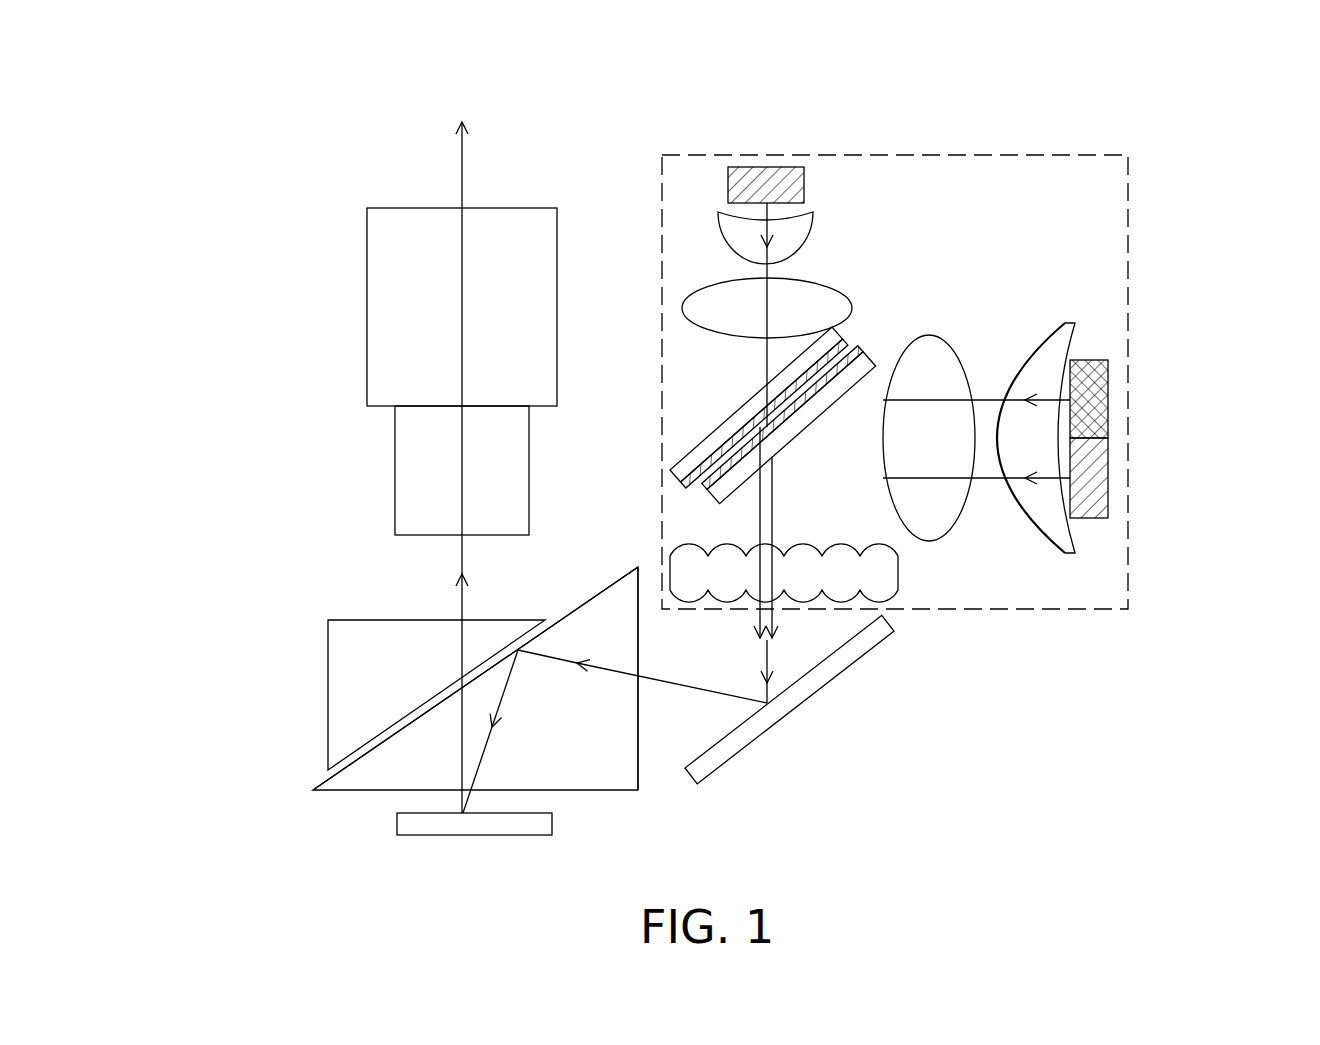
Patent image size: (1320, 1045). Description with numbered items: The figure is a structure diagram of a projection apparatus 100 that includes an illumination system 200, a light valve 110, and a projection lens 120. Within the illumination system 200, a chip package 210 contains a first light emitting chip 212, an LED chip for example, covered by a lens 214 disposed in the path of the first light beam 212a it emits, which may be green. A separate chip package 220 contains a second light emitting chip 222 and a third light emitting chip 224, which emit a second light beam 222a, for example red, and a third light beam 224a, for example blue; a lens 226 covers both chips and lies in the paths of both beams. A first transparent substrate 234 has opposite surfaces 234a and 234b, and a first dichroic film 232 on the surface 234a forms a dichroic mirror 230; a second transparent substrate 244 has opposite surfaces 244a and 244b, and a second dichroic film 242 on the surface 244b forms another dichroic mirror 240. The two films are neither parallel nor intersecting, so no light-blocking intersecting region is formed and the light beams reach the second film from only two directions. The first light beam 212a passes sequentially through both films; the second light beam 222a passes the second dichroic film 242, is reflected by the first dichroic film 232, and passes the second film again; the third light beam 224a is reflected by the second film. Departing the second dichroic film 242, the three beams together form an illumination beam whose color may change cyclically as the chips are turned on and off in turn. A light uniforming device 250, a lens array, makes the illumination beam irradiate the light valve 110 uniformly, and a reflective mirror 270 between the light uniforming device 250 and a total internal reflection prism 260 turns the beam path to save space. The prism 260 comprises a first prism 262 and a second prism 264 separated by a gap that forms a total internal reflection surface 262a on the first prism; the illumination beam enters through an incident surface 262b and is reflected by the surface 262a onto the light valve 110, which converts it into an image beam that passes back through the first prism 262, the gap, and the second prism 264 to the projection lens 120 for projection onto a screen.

The projection apparatus 100 is at (1287, 879).
The light valve 110 is at (517, 828).
The projection lens 120 is at (380, 318).
The illumination system 200 is at (1130, 199).
The chip package 210 is at (794, 153).
The first light emitting chip 212 is at (781, 178).
The lens 214 is at (803, 232).
The first light beam 212a is at (756, 268).
The chip package 220 is at (1085, 409).
The second light emitting chip 222 is at (1100, 478).
The third light emitting chip 224 is at (1100, 400).
The lens 226 is at (1119, 409).
The second light beam 222a is at (987, 420).
The third light beam 224a is at (987, 420).
The dichroic mirror 230 is at (754, 354).
The first dichroic film 232 is at (849, 345).
The first transparent substrate 234 is at (834, 330).
The surface 234a is at (692, 482).
The surface 234b is at (750, 397).
The dichroic mirror 240 is at (819, 378).
The second dichroic film 242 is at (862, 352).
The second transparent substrate 244 is at (876, 366).
The surface 244a is at (790, 474).
The surface 244b is at (737, 498).
The light uniforming device 250 is at (888, 572).
The total internal reflection prism 260 is at (442, 738).
The first prism 262 is at (350, 783).
The second prism 264 is at (345, 685).
The total internal reflection surface 262a is at (400, 722).
The incident surface 262b is at (641, 763).
The reflective mirror 270 is at (725, 752).